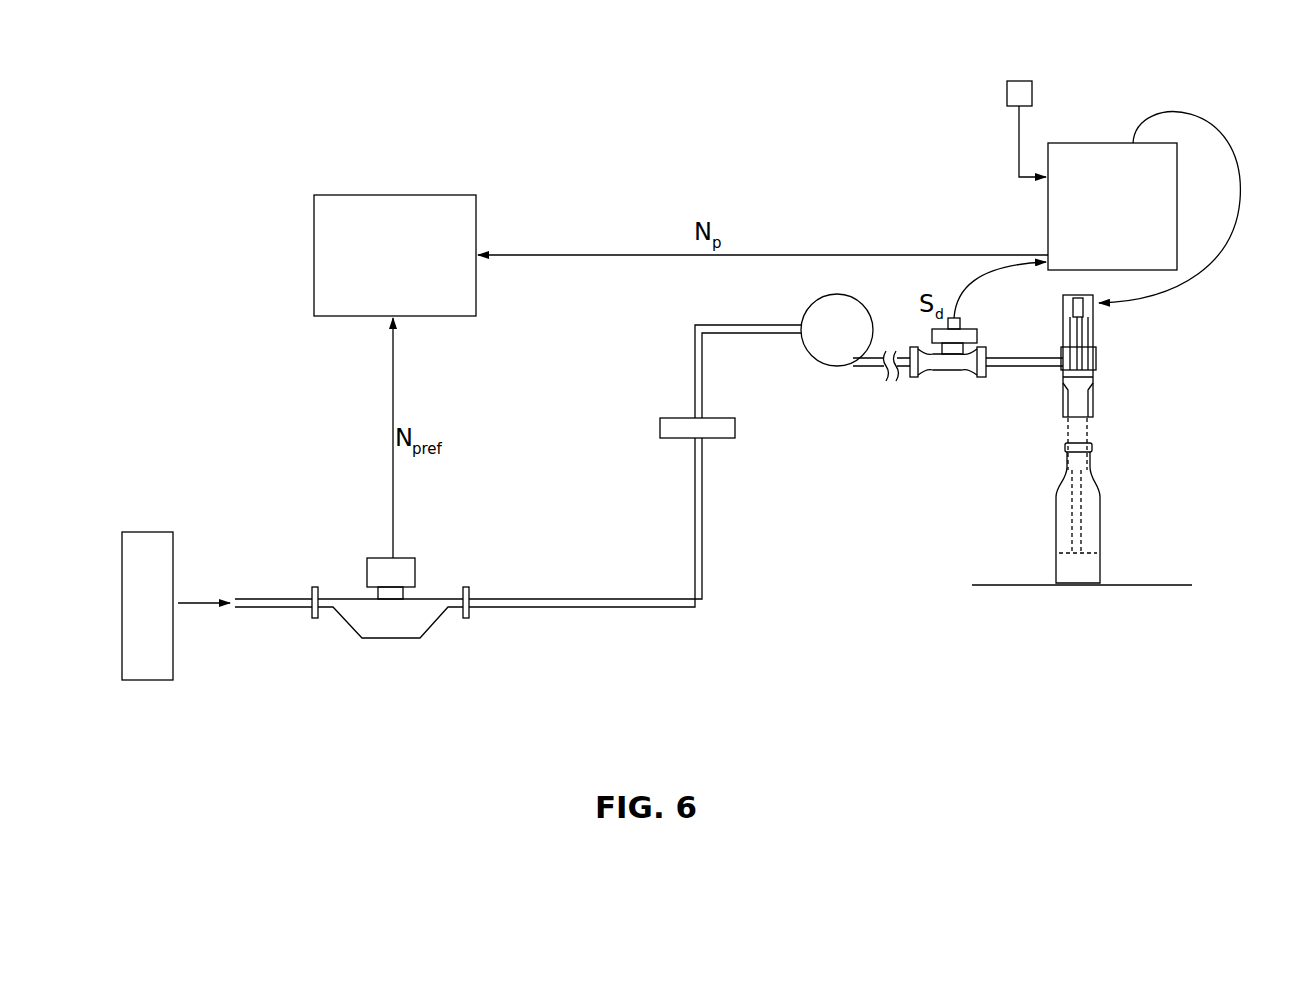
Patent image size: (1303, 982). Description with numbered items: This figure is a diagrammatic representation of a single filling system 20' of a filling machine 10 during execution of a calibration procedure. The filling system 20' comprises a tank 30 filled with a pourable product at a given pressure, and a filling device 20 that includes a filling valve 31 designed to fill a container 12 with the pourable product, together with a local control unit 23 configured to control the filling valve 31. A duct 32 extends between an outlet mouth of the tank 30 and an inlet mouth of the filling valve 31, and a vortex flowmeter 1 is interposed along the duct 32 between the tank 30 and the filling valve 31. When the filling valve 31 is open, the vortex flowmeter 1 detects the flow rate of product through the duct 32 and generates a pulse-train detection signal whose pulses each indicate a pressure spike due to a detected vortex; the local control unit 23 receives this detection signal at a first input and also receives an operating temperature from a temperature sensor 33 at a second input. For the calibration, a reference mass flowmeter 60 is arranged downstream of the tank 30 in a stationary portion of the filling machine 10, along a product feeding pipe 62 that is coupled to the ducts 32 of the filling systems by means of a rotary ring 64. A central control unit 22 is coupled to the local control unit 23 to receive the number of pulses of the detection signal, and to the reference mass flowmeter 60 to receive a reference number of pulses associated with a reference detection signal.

The filling machine 10 is at (187, 282).
The central control unit 22 is at (444, 203).
The local control unit 23 is at (1046, 212).
The temperature sensor 33 is at (1005, 92).
The filling system 20' is at (1191, 207).
The filling device 20 is at (1142, 424).
The filling valve 31 is at (1104, 360).
The duct 32 is at (865, 367).
The vortex flowmeter 1 is at (960, 363).
The container 12 is at (1096, 530).
The rotary ring 64 is at (737, 428).
The product feeding pipe 62 is at (607, 601).
The reference mass flowmeter 60 is at (402, 639).
The tank 30 is at (142, 543).